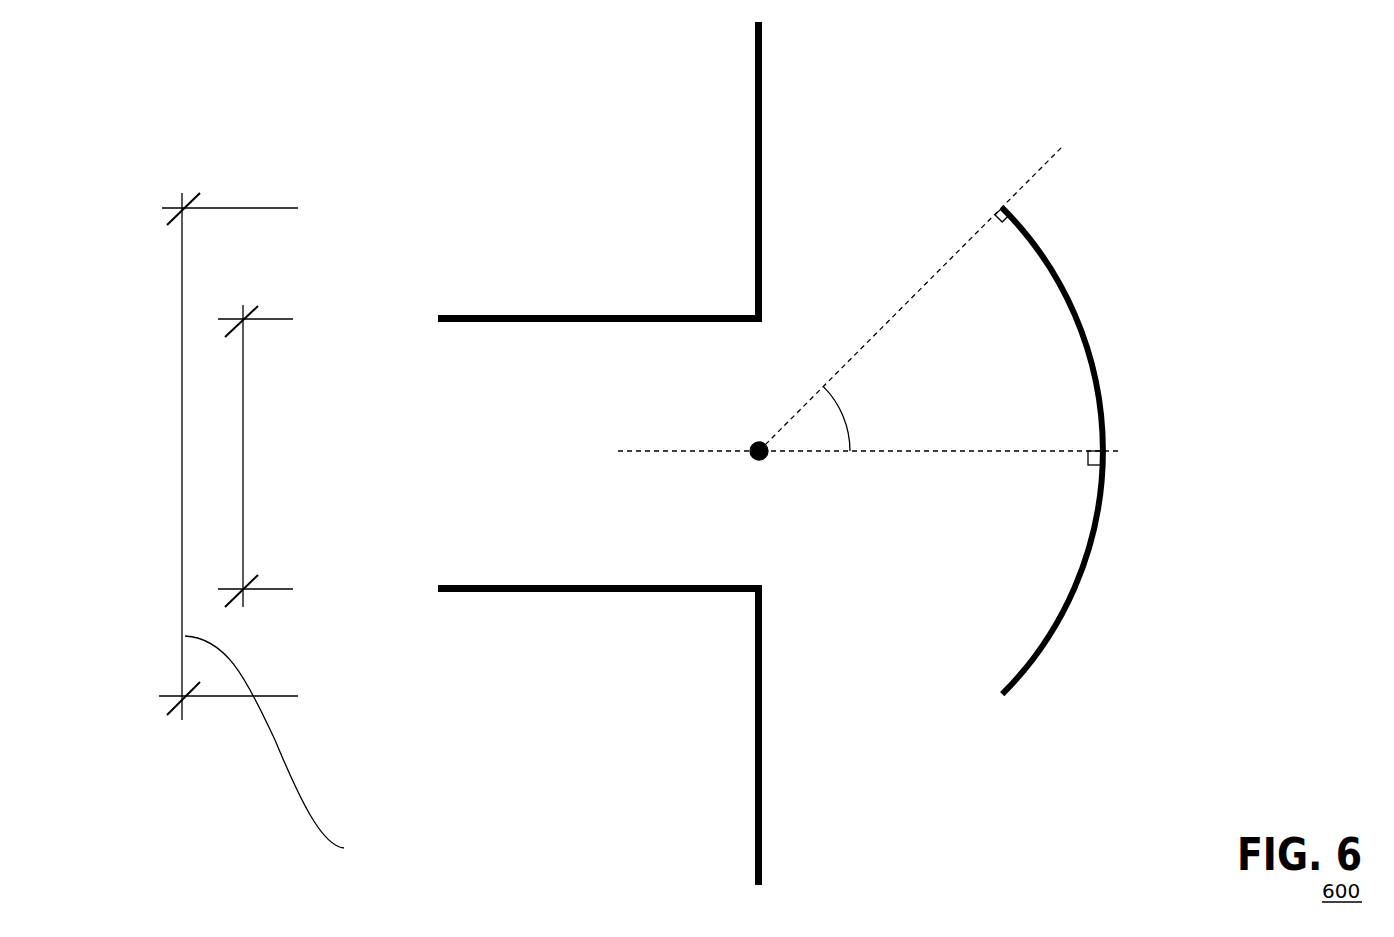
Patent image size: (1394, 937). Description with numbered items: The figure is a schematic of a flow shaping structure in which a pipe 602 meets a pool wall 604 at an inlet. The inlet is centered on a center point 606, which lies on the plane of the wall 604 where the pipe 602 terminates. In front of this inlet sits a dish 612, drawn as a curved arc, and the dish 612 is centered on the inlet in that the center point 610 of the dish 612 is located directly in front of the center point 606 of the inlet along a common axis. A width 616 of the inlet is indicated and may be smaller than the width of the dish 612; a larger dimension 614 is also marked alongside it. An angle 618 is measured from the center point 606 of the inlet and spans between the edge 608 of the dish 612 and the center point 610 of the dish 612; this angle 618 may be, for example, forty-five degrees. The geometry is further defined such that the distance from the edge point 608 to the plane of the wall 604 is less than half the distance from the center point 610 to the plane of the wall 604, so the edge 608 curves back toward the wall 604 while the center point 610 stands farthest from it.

The pipe 602 is at (560, 316).
The wall 604 is at (757, 232).
The center point of the inlet 606 is at (750, 452).
The edge of the dish 608 is at (1008, 211).
The center point of the dish 610 is at (1103, 457).
The dish 612 is at (1076, 595).
The first dimension 614 is at (226, 456).
The width of the inlet 616 is at (255, 456).
The angle 618 is at (845, 423).